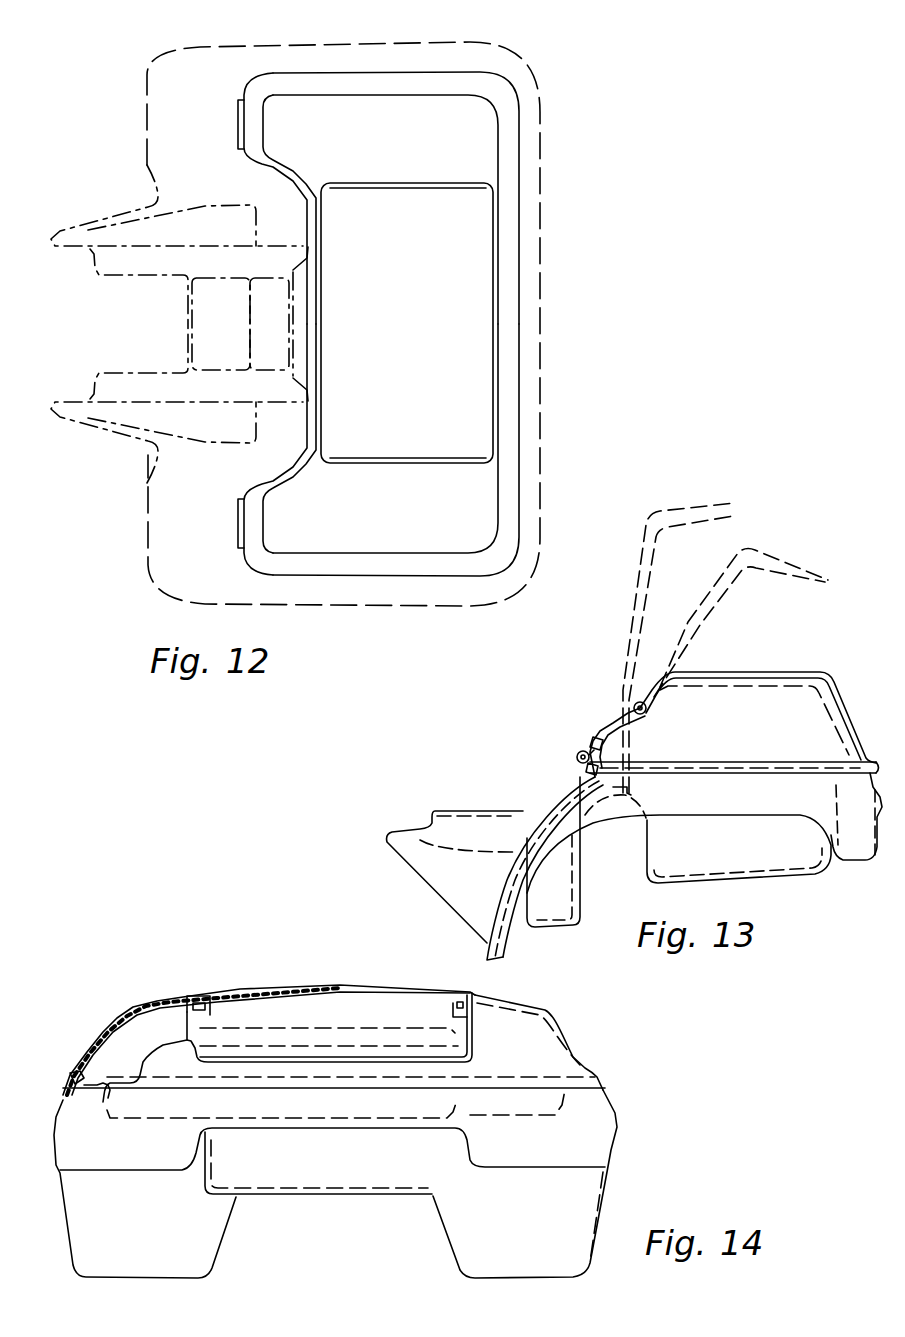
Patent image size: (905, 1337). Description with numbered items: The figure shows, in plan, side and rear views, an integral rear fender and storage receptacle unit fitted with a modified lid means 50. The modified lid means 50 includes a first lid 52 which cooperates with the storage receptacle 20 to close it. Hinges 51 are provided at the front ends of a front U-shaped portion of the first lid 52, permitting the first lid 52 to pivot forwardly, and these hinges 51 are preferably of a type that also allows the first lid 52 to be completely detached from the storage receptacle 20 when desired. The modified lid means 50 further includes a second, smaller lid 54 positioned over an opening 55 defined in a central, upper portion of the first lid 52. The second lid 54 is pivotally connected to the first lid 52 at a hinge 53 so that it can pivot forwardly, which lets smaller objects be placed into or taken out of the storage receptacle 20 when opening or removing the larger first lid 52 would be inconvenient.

In FIG. 13, the storage receptacle 20 is at (839, 878).
In FIG. 14, the storage receptacle 20 is at (306, 1158).
In FIG. 12, the modified lid means 50 is at (482, 123).
In FIG. 13, the modified lid means 50 is at (798, 665).
In FIG. 14, the modified lid means 50 is at (133, 995).
In FIG. 12, the hinges 51 is at (241, 127).
In FIG. 13, the hinges 51 is at (578, 751).
In FIG. 12, the first lid 52 is at (463, 517).
In FIG. 13, the first lid 52 is at (810, 747).
In FIG. 14, the first lid 52 is at (547, 1053).
In FIG. 13, the hinge 53 is at (646, 704).
In FIG. 12, the second lid 54 is at (477, 317).
In FIG. 13, the second lid 54 is at (635, 590).
In FIG. 13, the opening 55 is at (813, 697).
In FIG. 14, the opening 55 is at (473, 995).